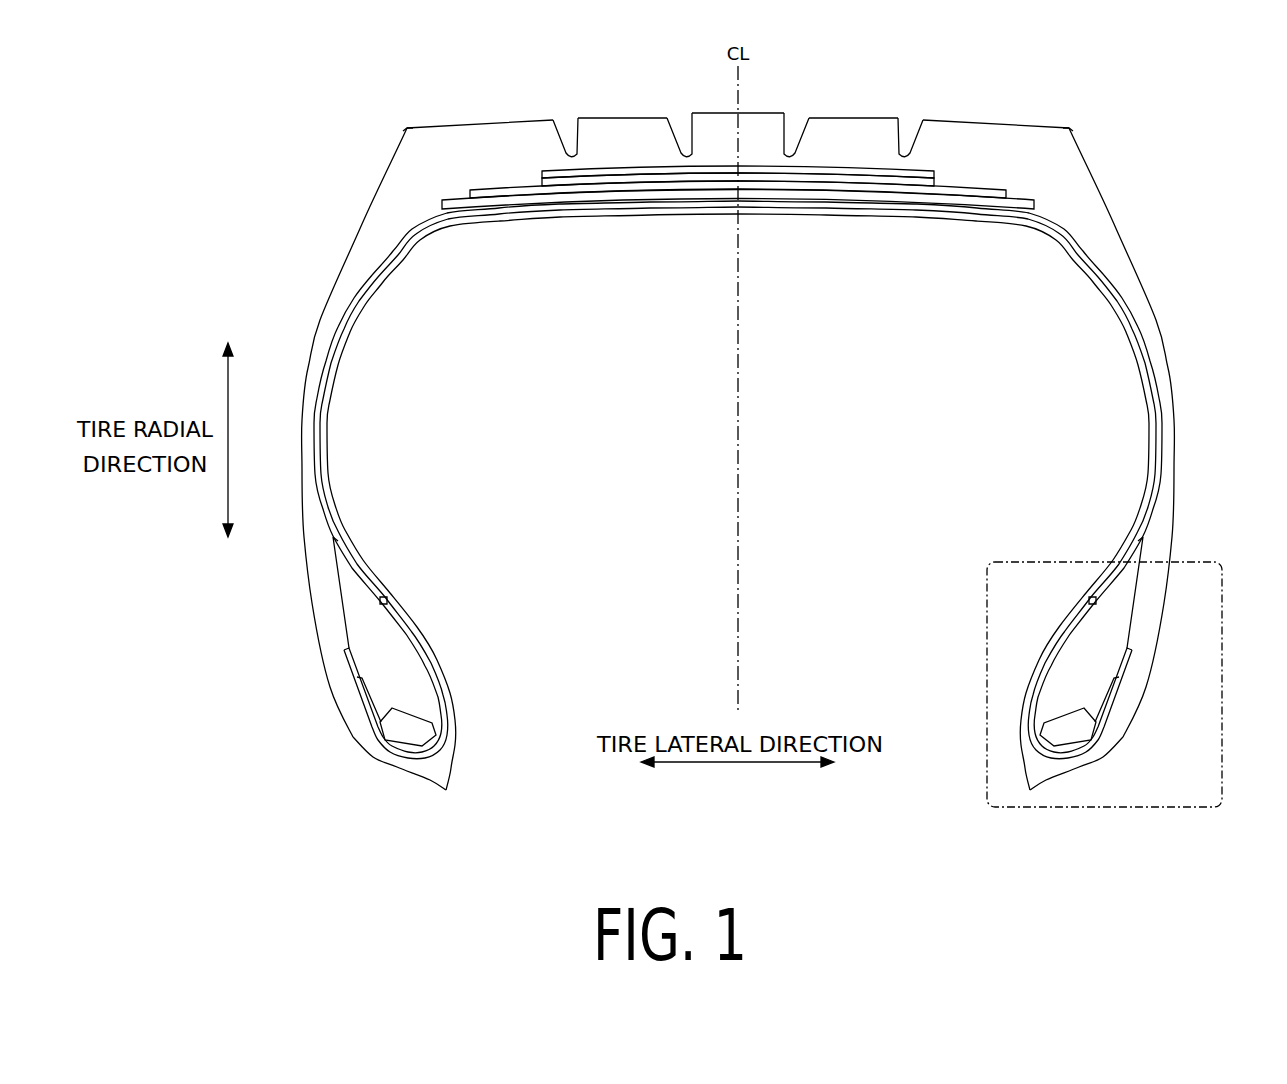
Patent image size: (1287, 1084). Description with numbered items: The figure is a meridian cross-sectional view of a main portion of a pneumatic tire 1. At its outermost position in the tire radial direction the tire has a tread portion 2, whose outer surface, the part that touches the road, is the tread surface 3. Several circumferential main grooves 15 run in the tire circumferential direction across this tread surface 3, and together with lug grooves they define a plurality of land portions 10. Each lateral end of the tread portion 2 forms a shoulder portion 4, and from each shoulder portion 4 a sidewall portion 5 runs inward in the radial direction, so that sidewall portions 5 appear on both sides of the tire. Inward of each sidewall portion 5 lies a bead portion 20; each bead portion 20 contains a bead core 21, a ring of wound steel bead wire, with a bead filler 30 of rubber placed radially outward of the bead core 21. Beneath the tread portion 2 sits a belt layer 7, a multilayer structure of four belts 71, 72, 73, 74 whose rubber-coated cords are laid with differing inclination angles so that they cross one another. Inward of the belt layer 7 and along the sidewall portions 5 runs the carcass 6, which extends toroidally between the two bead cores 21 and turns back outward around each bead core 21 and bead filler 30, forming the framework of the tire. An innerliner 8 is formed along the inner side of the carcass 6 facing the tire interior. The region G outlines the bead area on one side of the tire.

The pneumatic tire 1 is at (1135, 105).
The tread portion 2 is at (877, 125).
The tread surface 3 is at (855, 113).
The shoulder portion 4 is at (405, 130).
The sidewall portion 5 is at (302, 420).
The carcass 6 is at (1070, 258).
The belt layer 7 is at (738, 237).
The innerliner 8 is at (1142, 378).
The land portion 10 is at (489, 125).
The circumferential main groove 15 is at (563, 133).
The bead portion 20 is at (731, 663).
The bead core 21 is at (397, 720).
The bead filler 30 is at (362, 630).
The belt 71 is at (973, 198).
The belt 72 is at (942, 191).
The belt 73 is at (908, 183).
The belt 74 is at (738, 220).
The bead region G is at (1224, 583).